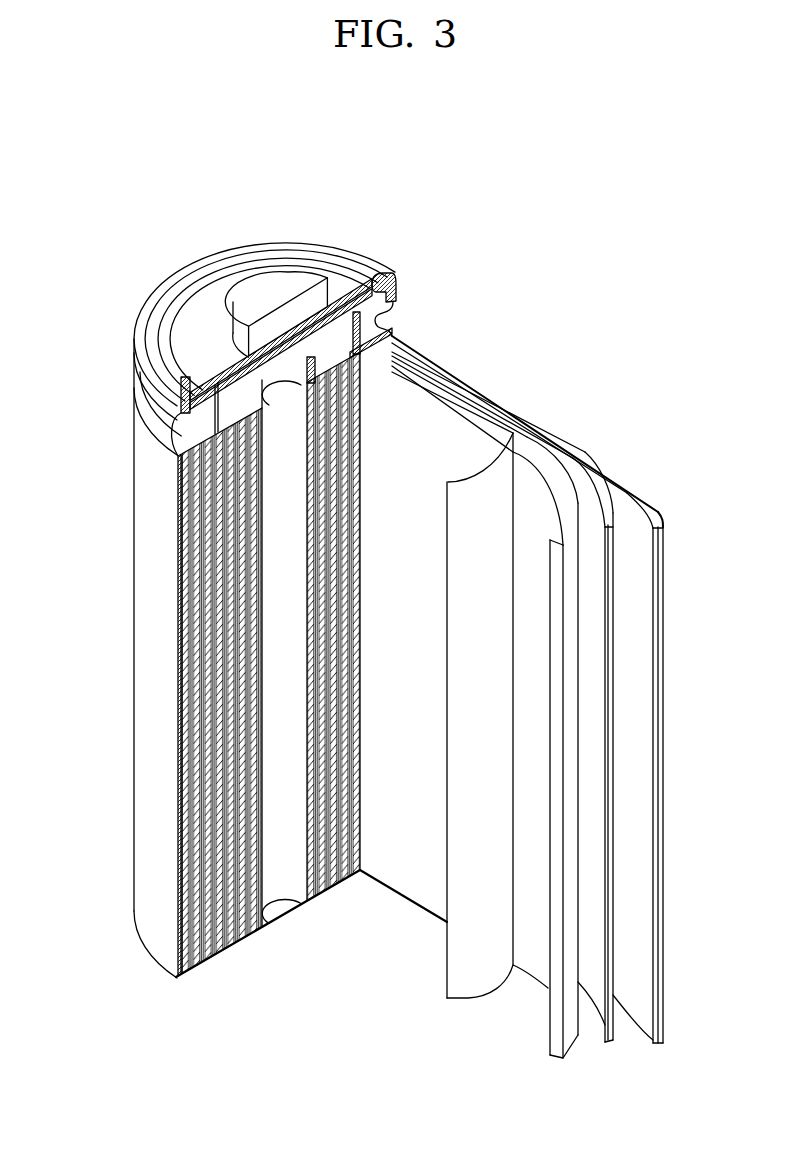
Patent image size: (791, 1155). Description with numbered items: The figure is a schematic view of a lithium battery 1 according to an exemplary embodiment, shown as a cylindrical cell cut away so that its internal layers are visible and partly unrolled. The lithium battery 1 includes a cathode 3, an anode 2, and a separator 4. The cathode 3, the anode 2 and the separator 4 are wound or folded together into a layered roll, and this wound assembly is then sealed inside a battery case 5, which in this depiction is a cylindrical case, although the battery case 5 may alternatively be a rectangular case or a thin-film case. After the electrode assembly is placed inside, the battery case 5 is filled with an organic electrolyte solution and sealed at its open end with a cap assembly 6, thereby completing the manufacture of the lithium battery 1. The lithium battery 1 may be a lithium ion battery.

The lithium battery 1 is at (466, 258).
The anode 2 is at (645, 503).
The cathode 3 is at (570, 487).
The separator 4 is at (492, 430).
The battery case 5 is at (140, 657).
The cap assembly 6 is at (257, 290).